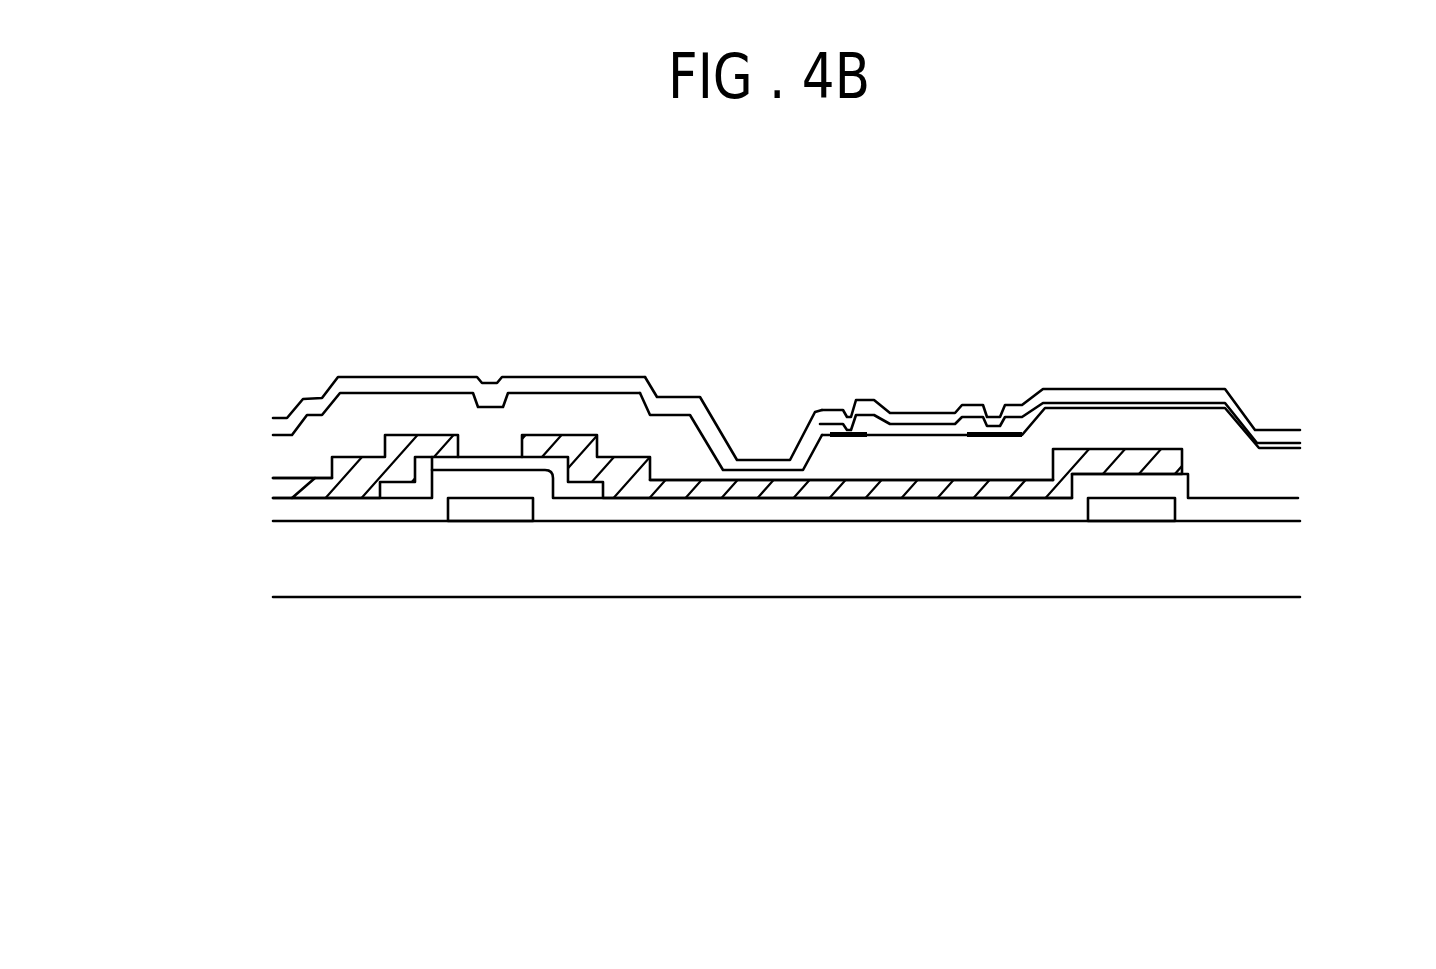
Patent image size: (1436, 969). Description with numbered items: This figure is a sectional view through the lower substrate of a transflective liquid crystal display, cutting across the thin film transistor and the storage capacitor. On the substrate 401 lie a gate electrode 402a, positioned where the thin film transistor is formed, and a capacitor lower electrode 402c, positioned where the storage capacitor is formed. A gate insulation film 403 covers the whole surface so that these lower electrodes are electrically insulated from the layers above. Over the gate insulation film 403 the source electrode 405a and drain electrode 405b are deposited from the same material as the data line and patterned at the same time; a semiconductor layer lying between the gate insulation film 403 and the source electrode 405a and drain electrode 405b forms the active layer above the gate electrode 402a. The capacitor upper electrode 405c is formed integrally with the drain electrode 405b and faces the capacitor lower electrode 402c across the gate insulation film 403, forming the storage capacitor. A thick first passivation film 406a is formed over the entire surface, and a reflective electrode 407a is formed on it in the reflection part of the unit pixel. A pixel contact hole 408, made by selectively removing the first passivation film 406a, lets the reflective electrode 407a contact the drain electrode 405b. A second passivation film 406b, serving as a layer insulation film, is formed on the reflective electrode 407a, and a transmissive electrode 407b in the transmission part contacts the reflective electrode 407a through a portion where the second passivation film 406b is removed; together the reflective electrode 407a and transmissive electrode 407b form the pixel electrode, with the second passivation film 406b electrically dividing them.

The substrate 401 is at (1272, 567).
The gate electrode 402a is at (493, 503).
The capacitor lower electrode 402c is at (1128, 512).
The gate insulation film 403 is at (950, 512).
The source electrode 405a is at (275, 487).
The drain electrode 405b is at (555, 447).
The capacitor upper electrode 405c is at (1160, 448).
The first passivation film 406a is at (1213, 468).
The second passivation film 406b is at (1105, 396).
The reflective electrode 407a is at (830, 432).
The transmissive electrode 407b is at (973, 430).
The pixel contact hole 408 is at (750, 412).